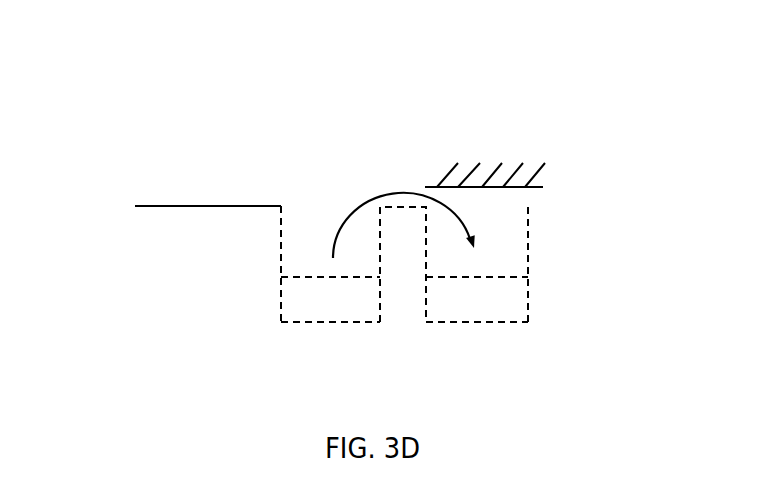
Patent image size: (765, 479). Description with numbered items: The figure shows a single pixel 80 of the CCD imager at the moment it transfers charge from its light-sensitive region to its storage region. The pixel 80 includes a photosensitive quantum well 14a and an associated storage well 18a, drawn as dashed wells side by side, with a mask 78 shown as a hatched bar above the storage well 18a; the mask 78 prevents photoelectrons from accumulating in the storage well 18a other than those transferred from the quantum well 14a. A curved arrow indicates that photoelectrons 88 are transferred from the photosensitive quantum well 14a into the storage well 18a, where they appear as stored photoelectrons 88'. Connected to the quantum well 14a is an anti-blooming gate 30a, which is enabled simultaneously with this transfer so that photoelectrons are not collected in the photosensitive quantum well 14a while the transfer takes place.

The anti-blooming gate 30a is at (170, 206).
The photoelectrons 88 is at (227, 279).
The stored photoelectrons 88' is at (558, 264).
The photosensitive quantum well 14a is at (331, 342).
The storage well 18a is at (477, 342).
The mask 78 is at (558, 168).
The pixel 80 is at (498, 87).